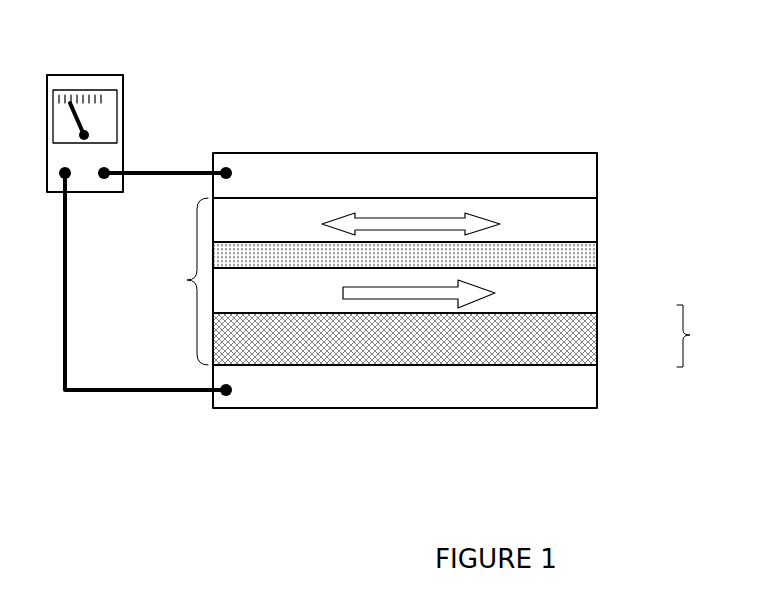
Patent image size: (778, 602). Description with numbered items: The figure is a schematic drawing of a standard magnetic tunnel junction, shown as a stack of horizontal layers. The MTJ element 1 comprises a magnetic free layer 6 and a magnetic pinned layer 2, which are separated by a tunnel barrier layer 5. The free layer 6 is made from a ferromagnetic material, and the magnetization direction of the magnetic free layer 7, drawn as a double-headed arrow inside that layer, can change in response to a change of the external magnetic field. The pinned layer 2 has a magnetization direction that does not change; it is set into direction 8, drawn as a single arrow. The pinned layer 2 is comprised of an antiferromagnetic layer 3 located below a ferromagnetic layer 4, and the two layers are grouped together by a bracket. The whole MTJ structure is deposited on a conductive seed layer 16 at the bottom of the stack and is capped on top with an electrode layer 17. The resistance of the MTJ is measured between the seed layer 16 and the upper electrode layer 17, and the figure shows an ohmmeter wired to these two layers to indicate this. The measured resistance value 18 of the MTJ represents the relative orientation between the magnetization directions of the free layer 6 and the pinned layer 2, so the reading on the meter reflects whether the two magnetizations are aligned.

The MTJ element 1 is at (185, 281).
The magnetic pinned layer 2 is at (697, 336).
The antiferromagnetic layer 3 is at (608, 346).
The ferromagnetic layer 4 is at (608, 293).
The tunnel barrier layer 5 is at (602, 255).
The magnetic free layer 6 is at (607, 225).
The magnetization direction of the magnetic free layer 7 is at (411, 224).
The magnetization direction of the pinned layer 8 is at (419, 294).
The conductive seed layer 16 is at (423, 397).
The electrode layer 17 is at (602, 180).
The measured resistance value 18 is at (90, 120).